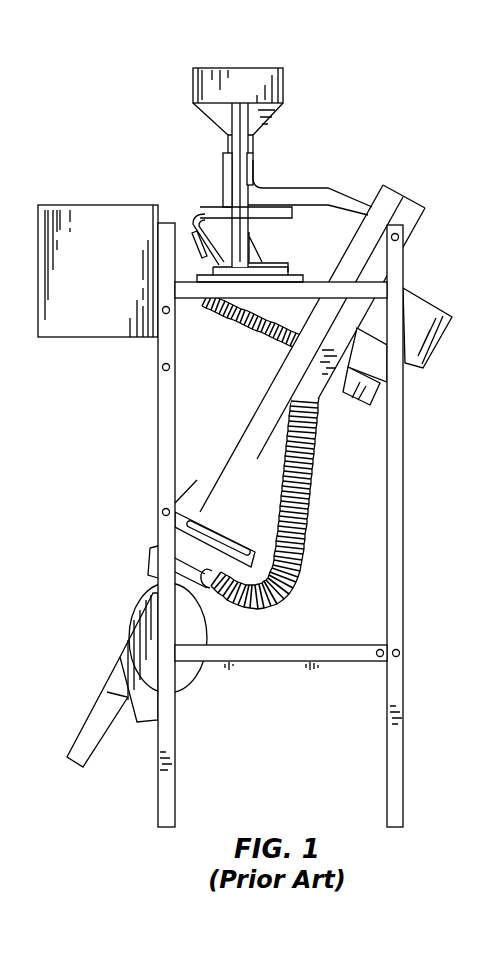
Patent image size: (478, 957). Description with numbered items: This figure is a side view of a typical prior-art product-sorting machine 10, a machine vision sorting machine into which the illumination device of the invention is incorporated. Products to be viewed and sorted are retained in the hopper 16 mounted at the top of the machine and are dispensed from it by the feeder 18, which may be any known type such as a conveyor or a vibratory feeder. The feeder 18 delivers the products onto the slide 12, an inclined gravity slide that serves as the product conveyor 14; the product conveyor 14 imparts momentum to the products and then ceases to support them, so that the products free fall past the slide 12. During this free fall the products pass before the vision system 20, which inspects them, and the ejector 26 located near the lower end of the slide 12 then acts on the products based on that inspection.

The product-sorting machine 10 is at (382, 58).
The slide 12 is at (258, 428).
The product conveyor 14 is at (266, 379).
The hopper 16 is at (225, 67).
The feeder 18 is at (295, 187).
The vision system 20 is at (233, 603).
The ejector 26 is at (156, 578).